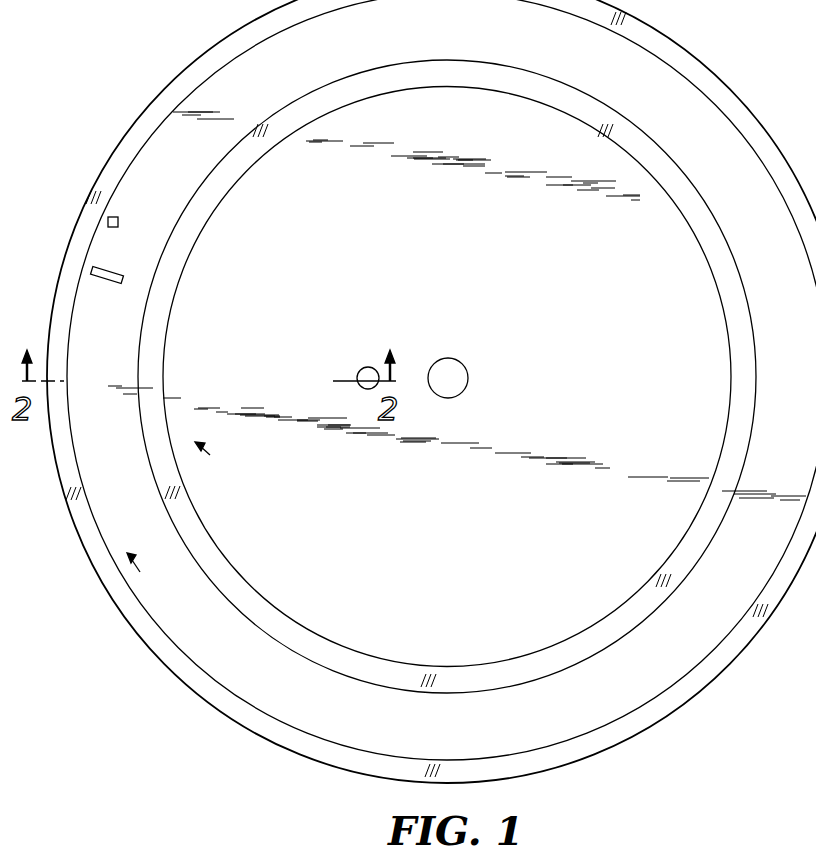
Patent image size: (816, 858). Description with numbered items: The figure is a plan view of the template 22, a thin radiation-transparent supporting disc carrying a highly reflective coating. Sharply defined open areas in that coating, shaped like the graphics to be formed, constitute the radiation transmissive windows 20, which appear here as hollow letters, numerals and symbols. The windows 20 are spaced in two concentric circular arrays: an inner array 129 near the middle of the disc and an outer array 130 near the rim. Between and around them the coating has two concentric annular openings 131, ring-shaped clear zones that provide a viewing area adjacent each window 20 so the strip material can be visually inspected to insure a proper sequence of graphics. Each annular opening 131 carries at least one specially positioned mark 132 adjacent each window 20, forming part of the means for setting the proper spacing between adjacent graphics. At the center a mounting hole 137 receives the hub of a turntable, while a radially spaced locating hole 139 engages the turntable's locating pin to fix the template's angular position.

The template 22 is at (718, 676).
The radiation transmissive windows 20 is at (95, 316).
The inner concentric circular array 129 is at (223, 456).
The outer concentric circular array 130 is at (157, 576).
The annular openings 131 is at (187, 515).
The mark 132 is at (200, 208).
The mounting hole 137 is at (462, 366).
The locating hole 139 is at (366, 367).